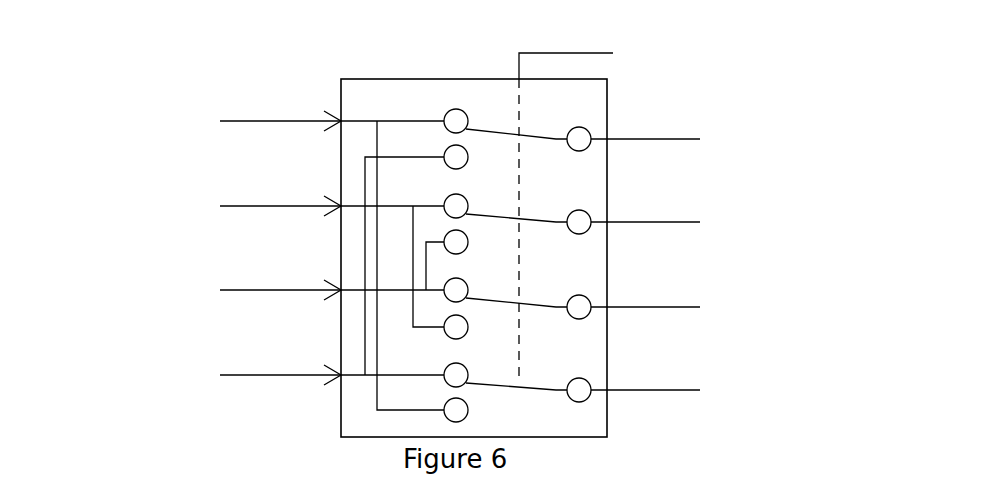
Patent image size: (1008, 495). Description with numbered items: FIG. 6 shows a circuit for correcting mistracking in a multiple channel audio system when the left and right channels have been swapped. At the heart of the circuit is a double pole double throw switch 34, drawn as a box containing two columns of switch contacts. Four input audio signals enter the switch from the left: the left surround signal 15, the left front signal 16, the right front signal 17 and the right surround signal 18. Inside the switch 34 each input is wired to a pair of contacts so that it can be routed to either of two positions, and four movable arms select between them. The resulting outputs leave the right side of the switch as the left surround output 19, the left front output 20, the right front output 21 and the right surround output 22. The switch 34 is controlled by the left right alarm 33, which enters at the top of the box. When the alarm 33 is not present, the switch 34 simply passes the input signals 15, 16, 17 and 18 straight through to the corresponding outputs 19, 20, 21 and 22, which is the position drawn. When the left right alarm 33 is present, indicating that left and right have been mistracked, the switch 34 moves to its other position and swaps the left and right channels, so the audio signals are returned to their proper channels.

The left surround signal 15 is at (249, 113).
The left front signal 16 is at (249, 199).
The right front signal 17 is at (247, 281).
The right surround signal 18 is at (249, 371).
The left surround output 19 is at (665, 131).
The left front output 20 is at (665, 213).
The right front output 21 is at (665, 296).
The right surround output 22 is at (665, 383).
The left right alarm 33 is at (602, 58).
The double pole double throw switch 34 is at (525, 431).